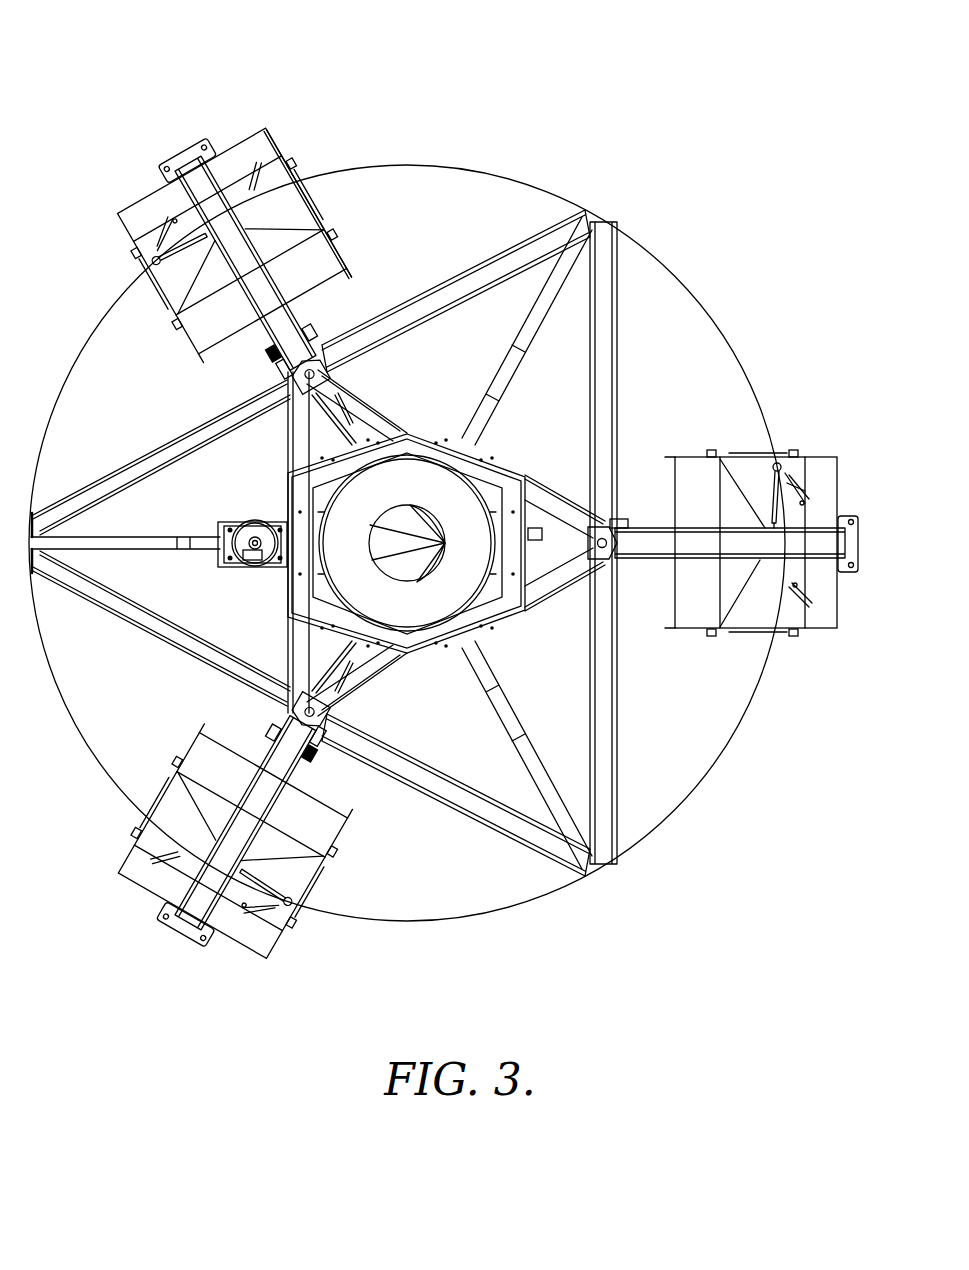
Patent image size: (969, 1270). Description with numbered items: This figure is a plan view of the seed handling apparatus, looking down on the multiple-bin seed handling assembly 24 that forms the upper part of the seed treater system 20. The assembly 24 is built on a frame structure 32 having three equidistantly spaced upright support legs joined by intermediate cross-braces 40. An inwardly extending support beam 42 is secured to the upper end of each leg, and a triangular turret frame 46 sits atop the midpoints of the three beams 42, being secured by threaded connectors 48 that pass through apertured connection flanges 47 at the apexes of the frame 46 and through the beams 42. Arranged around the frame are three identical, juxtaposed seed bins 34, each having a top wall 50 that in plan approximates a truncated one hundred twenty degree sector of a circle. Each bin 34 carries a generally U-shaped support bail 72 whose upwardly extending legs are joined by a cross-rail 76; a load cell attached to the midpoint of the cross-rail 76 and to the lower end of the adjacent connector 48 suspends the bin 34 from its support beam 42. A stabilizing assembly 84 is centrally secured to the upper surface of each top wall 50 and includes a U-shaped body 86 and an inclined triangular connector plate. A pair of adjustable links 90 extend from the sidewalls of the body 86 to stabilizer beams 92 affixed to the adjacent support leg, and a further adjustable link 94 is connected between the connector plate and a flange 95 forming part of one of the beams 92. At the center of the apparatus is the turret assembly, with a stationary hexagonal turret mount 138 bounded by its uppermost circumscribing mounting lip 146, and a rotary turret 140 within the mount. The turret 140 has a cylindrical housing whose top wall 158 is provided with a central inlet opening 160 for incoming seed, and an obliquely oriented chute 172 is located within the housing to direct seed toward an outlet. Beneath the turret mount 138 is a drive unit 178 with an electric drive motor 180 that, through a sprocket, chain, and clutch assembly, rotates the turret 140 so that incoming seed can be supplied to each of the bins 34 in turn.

The seed treater system 20 is at (597, 100).
The multiple-bin seed handling assembly 24 is at (690, 210).
The frame structure 32 is at (165, 138).
The seed bin 34 is at (768, 355).
The cross-brace 40 is at (158, 870).
The support beam 42 is at (262, 298).
The triangular turret frame 46 is at (548, 615).
The connection flange 47 is at (316, 350).
The threaded connector 48 is at (300, 372).
The top wall 50 is at (407, 543).
The support bail 72 is at (510, 222).
The cross-rail 76 is at (607, 355).
The stabilizing assembly 84 is at (338, 198).
The U-shaped body 86 is at (320, 265).
The adjustable link 90 is at (718, 457).
The stabilizer beam 92 is at (248, 146).
The adjustable link 94 is at (757, 470).
The flange 95 is at (797, 458).
The stationary turret mount 138 is at (432, 445).
The rotary turret 140 is at (478, 462).
The mounting lip 146 is at (395, 410).
The top wall 158 is at (413, 622).
The central inlet opening 160 is at (390, 518).
The chute 172 is at (398, 550).
The drive unit 178 is at (258, 572).
The electric drive motor 180 is at (255, 520).